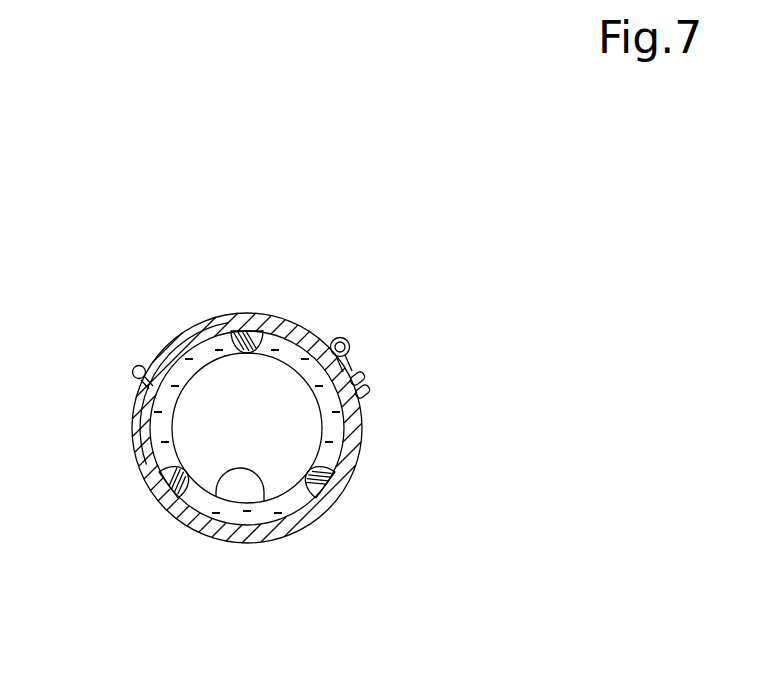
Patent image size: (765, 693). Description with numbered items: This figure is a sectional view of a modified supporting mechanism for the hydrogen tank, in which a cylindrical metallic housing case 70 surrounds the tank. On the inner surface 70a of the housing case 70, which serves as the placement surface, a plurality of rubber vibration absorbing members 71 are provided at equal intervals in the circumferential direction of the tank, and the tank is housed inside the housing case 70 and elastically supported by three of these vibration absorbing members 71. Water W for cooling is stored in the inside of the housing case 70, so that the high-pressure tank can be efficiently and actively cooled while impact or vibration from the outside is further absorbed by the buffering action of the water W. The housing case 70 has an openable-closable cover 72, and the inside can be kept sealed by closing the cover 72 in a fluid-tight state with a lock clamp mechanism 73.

The housing case 70 is at (146, 455).
The inner surface 70a is at (215, 500).
The vibration absorbing member 71 is at (246, 332).
The cover 72 is at (307, 328).
The lock clamp mechanism 73 is at (349, 353).
The water W is at (158, 425).